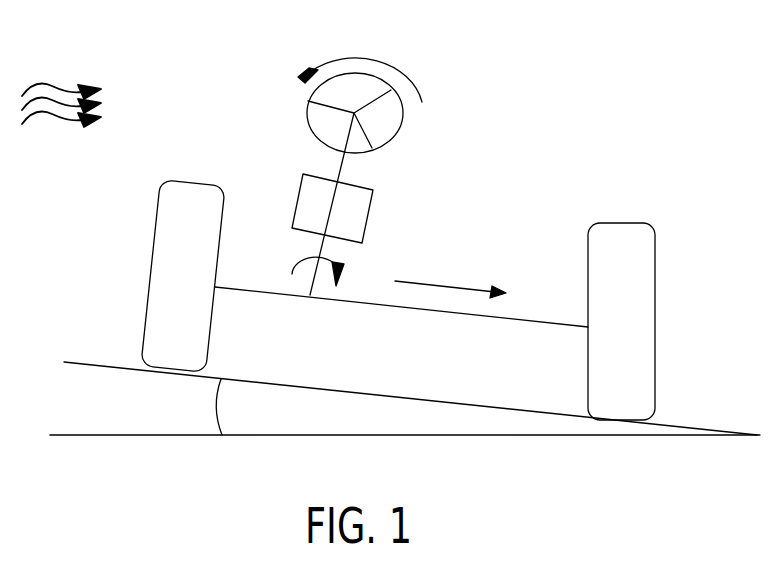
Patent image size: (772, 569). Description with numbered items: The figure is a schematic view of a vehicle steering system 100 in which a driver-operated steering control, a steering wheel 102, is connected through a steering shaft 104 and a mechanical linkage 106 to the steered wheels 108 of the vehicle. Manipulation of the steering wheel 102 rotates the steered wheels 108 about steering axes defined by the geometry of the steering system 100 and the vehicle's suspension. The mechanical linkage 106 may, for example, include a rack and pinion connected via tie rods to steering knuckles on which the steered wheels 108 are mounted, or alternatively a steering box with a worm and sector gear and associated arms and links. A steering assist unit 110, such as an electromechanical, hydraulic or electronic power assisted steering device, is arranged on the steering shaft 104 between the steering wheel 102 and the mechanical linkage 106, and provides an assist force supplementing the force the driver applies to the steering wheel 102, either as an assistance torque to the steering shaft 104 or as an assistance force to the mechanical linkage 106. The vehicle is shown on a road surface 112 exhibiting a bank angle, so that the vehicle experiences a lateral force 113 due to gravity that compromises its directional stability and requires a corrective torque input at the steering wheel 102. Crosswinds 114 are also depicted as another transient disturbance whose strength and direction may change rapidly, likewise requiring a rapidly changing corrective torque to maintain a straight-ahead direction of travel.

The vehicle steering system 100 is at (572, 110).
The steering wheel 102 is at (388, 131).
The steering shaft 104 is at (341, 167).
The mechanical linkage 106 is at (390, 307).
The steered wheels 108 is at (165, 225).
The steering assist unit 110 is at (360, 206).
The road surface 112 is at (268, 380).
The lateral force 113 is at (448, 285).
The crosswinds 114 is at (58, 87).